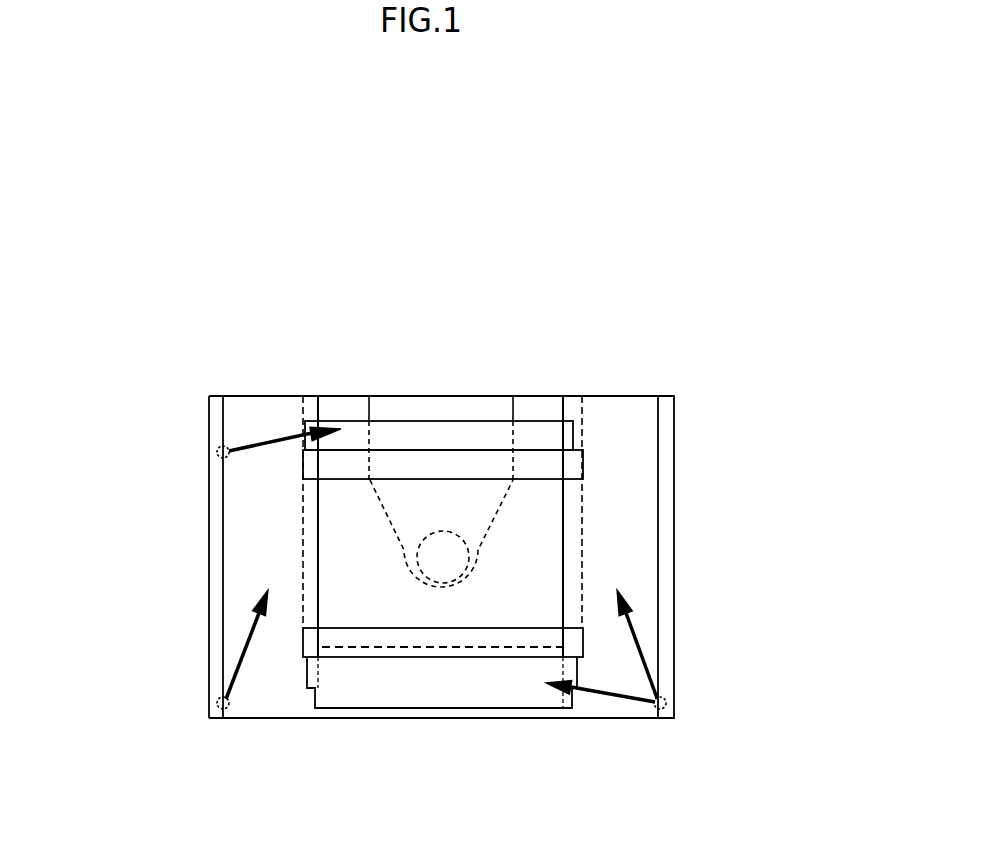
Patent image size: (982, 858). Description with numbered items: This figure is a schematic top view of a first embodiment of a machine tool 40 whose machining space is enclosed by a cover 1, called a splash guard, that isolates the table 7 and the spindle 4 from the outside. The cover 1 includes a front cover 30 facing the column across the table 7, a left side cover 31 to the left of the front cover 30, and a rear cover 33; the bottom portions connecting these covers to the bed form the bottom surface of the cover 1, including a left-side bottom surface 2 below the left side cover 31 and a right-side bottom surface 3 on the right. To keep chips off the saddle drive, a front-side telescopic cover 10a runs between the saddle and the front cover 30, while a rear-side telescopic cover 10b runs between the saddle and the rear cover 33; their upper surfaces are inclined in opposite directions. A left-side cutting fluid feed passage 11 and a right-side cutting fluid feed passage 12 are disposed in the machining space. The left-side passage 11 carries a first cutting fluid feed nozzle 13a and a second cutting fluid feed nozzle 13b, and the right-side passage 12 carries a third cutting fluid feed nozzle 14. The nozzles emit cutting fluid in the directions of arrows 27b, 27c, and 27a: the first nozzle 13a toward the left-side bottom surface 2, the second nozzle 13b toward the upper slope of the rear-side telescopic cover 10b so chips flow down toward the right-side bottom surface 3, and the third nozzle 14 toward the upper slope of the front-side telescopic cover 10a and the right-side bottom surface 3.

The machine tool 40 is at (463, 178).
The cover 1 is at (675, 575).
The left-side bottom surface 2 is at (243, 605).
The right-side bottom surface 3 is at (632, 508).
The spindle 4 is at (444, 545).
The table 7 is at (367, 605).
The front-side telescopic cover 10a is at (455, 673).
The rear-side telescopic cover 10b is at (421, 424).
The left-side cutting fluid feed passage 11 is at (223, 415).
The right-side cutting fluid feed passage 12 is at (655, 418).
The first cutting fluid feed nozzle 13a is at (215, 698).
The second cutting fluid feed nozzle 13b is at (216, 448).
The third cutting fluid feed nozzle 14 is at (665, 712).
The arrow 27a is at (636, 650).
The arrow 27b is at (245, 650).
The arrow 27c is at (268, 438).
The front cover 30 is at (535, 715).
The left side cover 31 is at (208, 517).
The rear cover 33 is at (280, 398).